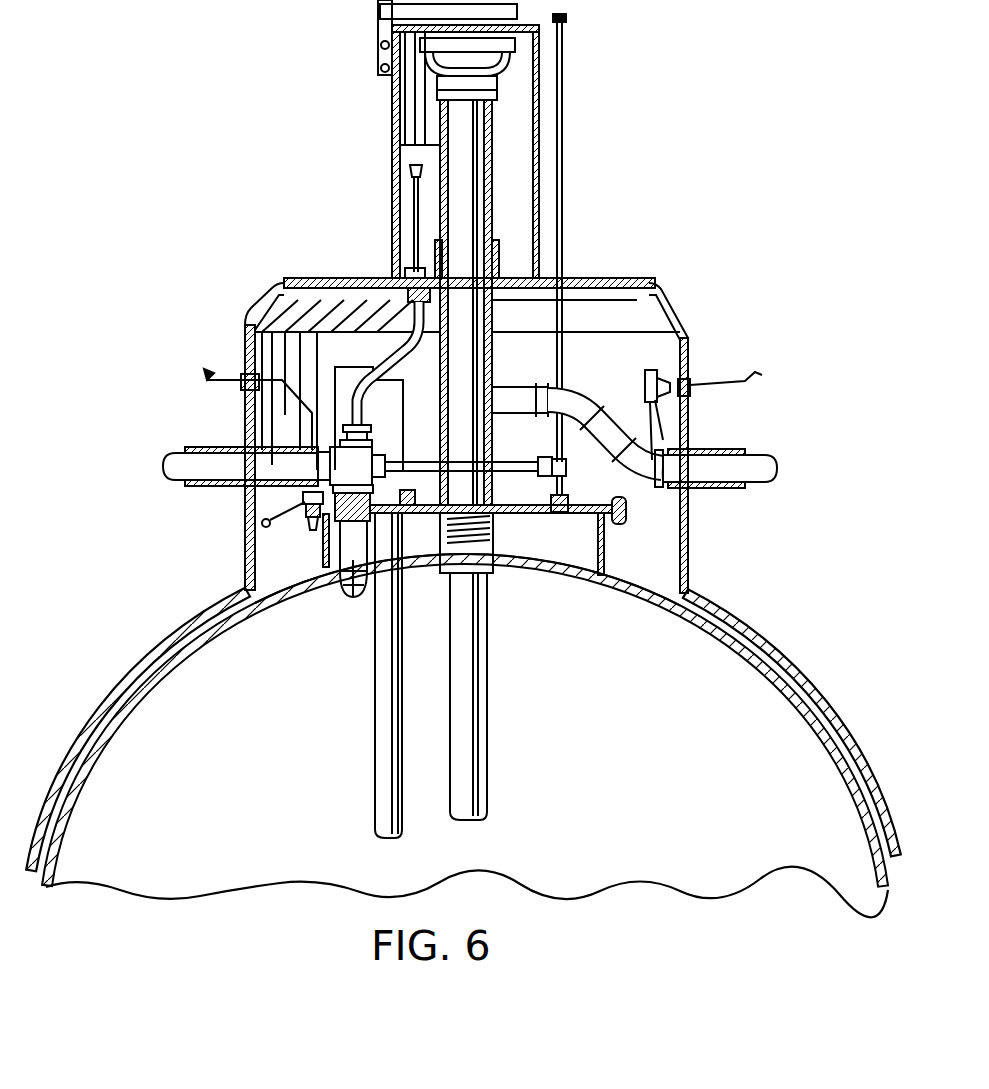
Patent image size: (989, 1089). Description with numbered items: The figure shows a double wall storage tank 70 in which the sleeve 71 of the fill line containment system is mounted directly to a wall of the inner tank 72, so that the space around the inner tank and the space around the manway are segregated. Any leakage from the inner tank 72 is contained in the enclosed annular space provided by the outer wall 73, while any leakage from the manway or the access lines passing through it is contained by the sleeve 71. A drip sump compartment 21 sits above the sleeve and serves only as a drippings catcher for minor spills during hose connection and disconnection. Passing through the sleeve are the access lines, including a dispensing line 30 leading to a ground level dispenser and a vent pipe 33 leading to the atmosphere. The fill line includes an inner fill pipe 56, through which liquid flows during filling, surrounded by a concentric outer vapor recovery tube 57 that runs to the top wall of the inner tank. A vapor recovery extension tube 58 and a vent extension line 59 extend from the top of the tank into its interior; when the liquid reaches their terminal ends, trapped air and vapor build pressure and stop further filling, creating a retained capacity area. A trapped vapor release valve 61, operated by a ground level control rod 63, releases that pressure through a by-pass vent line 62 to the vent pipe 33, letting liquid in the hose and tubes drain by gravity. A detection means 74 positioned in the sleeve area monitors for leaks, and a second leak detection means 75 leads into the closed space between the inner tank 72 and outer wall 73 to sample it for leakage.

The drip sump compartment 21 is at (385, 127).
The outer vapor recovery tube 57 is at (516, 176).
The ground level control rod 63 is at (562, 170).
The sleeve 71 is at (690, 352).
The second leak detection means 75 is at (648, 381).
The vent pipe 33 is at (178, 455).
The dispensing line 30 is at (757, 467).
The by-pass vent line 62 is at (525, 465).
The trapped vapor release valve 61 is at (566, 502).
The vapor recovery extension tube 58 is at (496, 548).
The detection means 74 is at (268, 528).
The vent extension line 59 is at (350, 565).
The outer wall 73 is at (735, 612).
The inner tank 72 is at (702, 622).
The double wall storage tank 70 is at (785, 655).
The inner fill pipe 56 is at (468, 704).